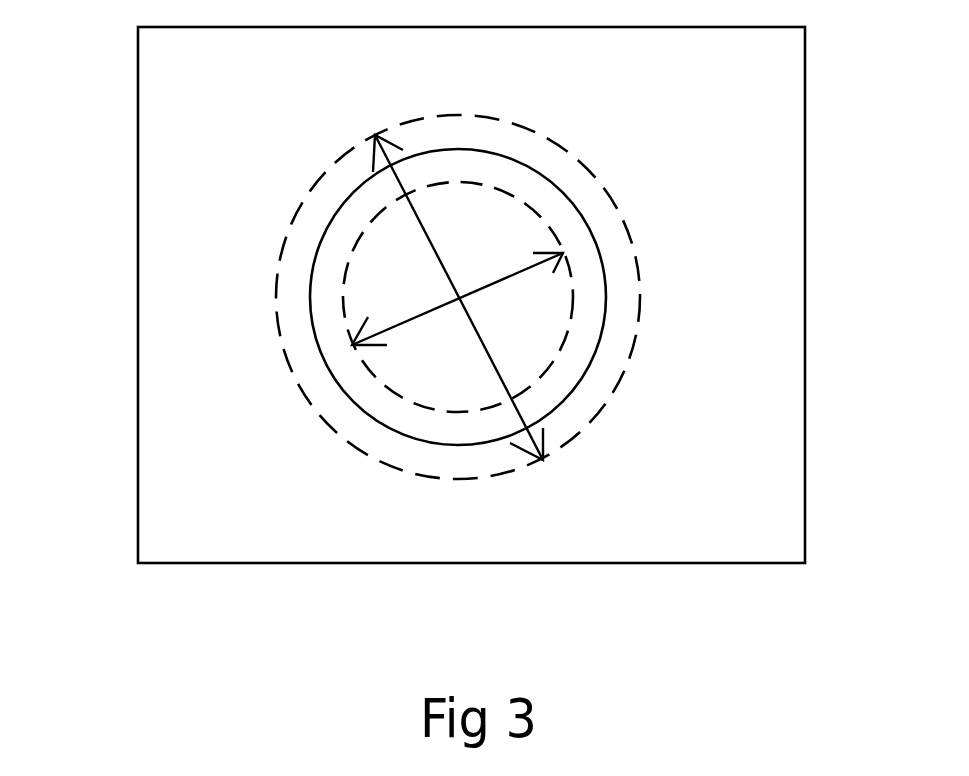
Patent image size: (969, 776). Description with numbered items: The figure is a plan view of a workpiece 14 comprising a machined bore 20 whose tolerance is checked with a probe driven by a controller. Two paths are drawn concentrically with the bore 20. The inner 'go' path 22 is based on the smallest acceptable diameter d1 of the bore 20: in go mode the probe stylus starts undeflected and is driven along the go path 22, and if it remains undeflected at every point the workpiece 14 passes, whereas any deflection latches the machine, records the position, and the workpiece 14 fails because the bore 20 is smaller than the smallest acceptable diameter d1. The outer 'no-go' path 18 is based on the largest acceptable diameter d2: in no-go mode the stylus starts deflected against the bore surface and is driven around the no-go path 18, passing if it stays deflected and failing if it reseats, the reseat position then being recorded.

The workpiece 14 is at (740, 82).
The no-go path 18 is at (593, 173).
The machined bore 20 is at (607, 267).
The go path 22 is at (563, 345).
The smallest acceptable diameter d1 is at (415, 317).
The largest acceptable diameter d2 is at (440, 272).